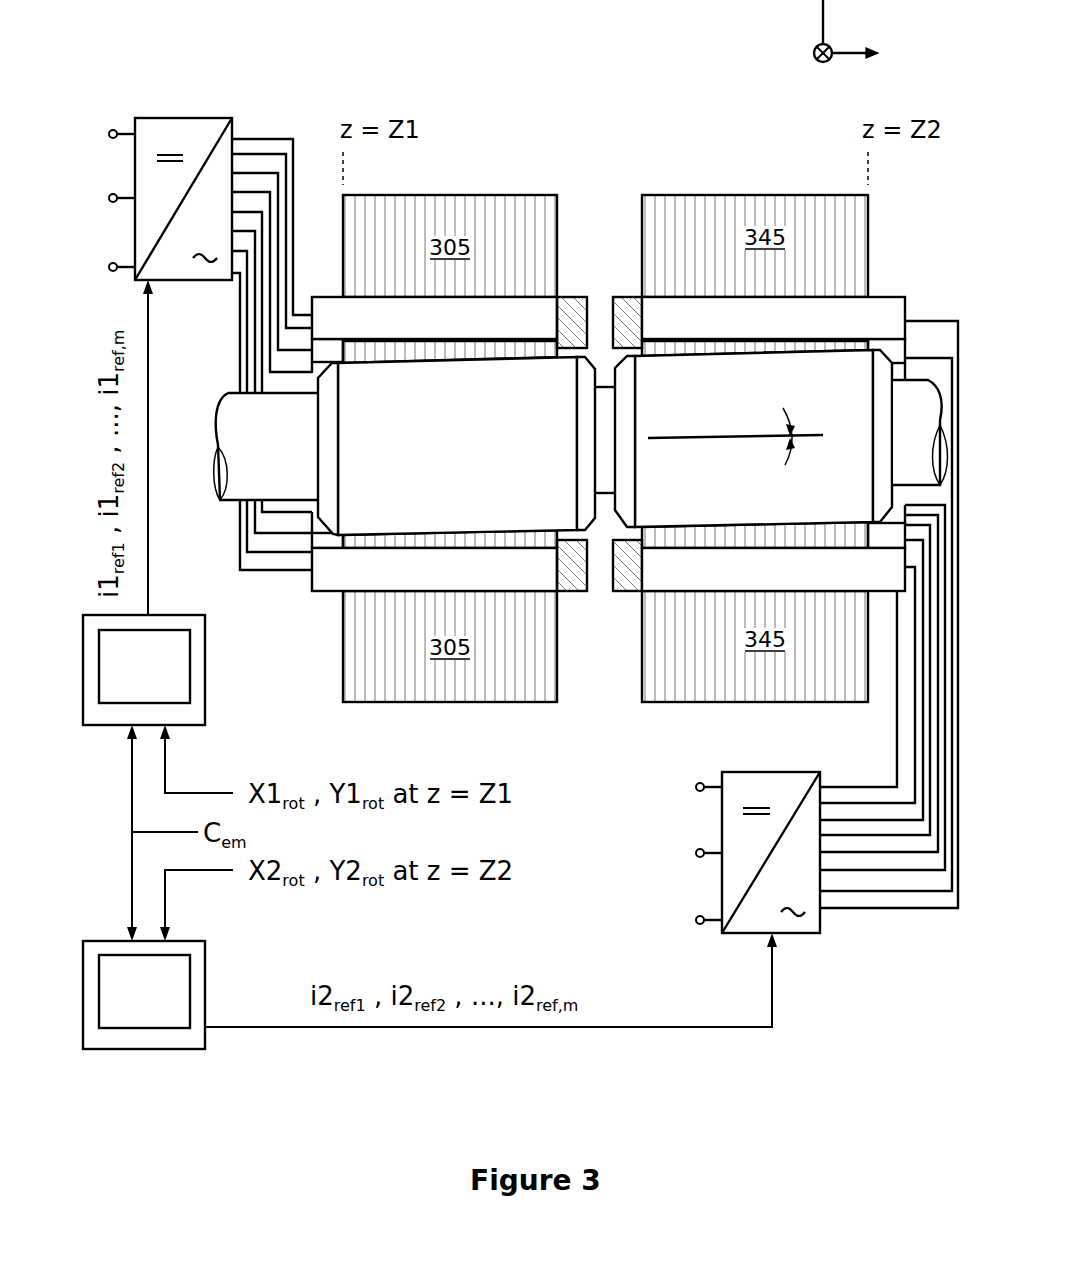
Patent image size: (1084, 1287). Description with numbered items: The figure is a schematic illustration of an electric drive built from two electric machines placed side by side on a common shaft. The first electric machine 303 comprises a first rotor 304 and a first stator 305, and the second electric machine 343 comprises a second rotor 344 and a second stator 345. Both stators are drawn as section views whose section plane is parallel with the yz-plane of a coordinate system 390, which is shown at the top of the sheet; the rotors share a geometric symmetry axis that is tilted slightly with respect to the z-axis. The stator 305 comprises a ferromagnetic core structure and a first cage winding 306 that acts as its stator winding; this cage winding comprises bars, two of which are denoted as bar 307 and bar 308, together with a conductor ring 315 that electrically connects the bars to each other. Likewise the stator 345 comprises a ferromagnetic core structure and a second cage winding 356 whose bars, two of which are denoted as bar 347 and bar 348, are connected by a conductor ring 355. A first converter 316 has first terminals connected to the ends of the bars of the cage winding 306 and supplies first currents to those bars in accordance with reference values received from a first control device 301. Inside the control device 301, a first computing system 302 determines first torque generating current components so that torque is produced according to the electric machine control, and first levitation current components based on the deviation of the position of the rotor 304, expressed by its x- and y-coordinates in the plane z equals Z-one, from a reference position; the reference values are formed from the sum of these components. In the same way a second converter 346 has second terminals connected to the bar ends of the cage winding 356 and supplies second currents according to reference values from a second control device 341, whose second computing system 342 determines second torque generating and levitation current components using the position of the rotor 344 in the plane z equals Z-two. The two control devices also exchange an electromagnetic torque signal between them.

The first control device 301 is at (147, 631).
The first computing system 302 is at (125, 676).
The first electric machine 303 is at (492, 195).
The first rotor 304 is at (442, 456).
The first stator 305 is at (450, 448).
The first cage winding 306 is at (335, 592).
The bar of the first cage winding 307 is at (395, 329).
The bar of the first cage winding 308 is at (395, 580).
The conductor ring 315 is at (577, 295).
The first converter 316 is at (167, 117).
The second control device 341 is at (177, 1021).
The second computing system 342 is at (125, 1001).
The second electric machine 343 is at (707, 195).
The second rotor 344 is at (812, 497).
The second stator 345 is at (755, 448).
The second converter 346 is at (755, 771).
The bar of the second cage winding 347 is at (762, 329).
The bar of the second cage winding 348 is at (775, 580).
The conductor ring 355 is at (628, 596).
The second cage winding 356 is at (903, 295).
The coordinate system 390 is at (877, 41).